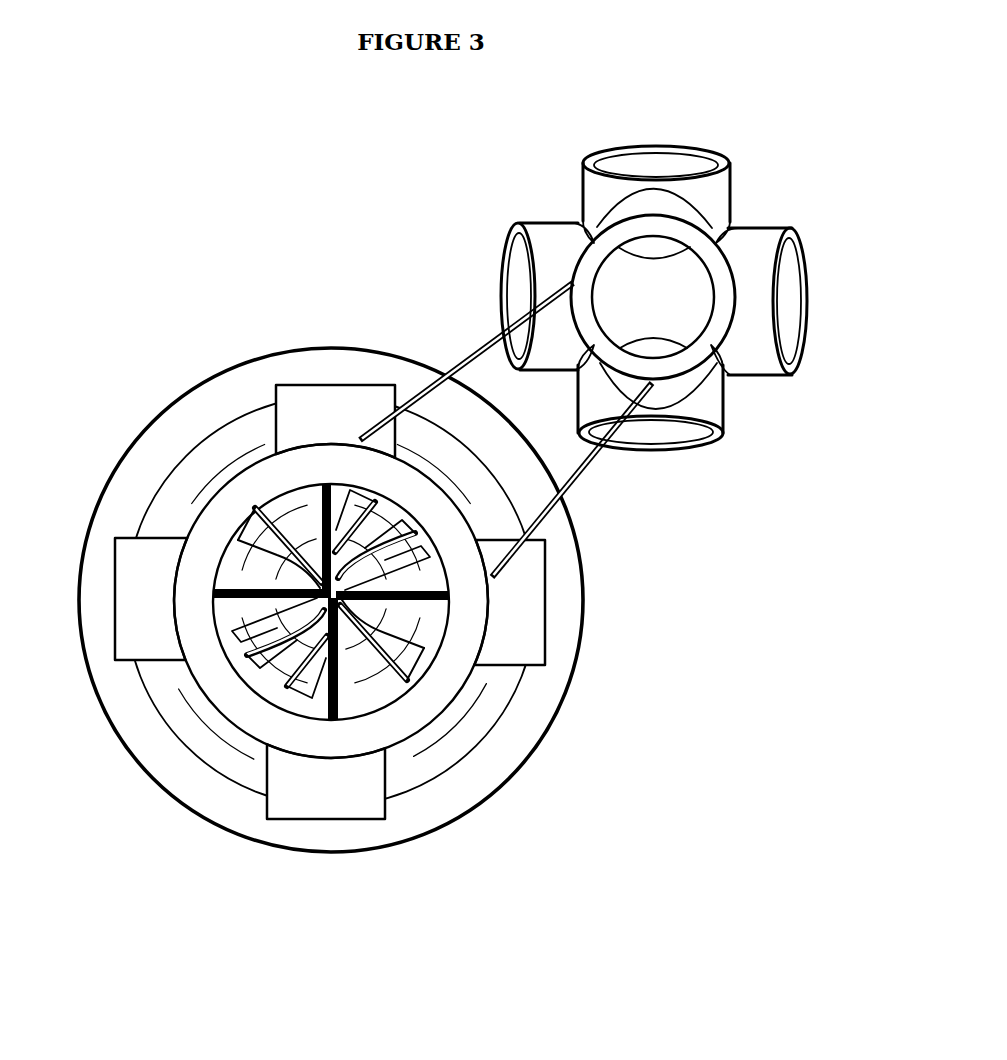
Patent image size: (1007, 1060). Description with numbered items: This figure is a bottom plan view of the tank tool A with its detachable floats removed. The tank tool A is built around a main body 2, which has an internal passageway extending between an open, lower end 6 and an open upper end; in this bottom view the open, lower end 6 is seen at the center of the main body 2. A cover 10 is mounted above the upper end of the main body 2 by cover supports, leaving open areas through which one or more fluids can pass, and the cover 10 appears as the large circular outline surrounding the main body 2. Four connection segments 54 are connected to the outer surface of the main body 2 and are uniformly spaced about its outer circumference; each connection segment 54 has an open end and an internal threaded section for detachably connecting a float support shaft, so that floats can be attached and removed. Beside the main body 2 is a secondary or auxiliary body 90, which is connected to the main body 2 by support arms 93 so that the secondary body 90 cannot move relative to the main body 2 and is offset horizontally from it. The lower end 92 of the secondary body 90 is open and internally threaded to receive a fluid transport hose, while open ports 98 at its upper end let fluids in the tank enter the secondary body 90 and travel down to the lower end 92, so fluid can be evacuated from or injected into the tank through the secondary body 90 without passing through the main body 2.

The main body 2 is at (227, 727).
The open, lower end 6 is at (372, 695).
The cover 10 is at (497, 787).
The connection segments 54 is at (295, 420).
The secondary body 90 is at (669, 289).
The lower end 92 is at (682, 325).
The support arms 93 is at (468, 362).
The open ports 98 is at (667, 143).
The tank tool A is at (657, 556).